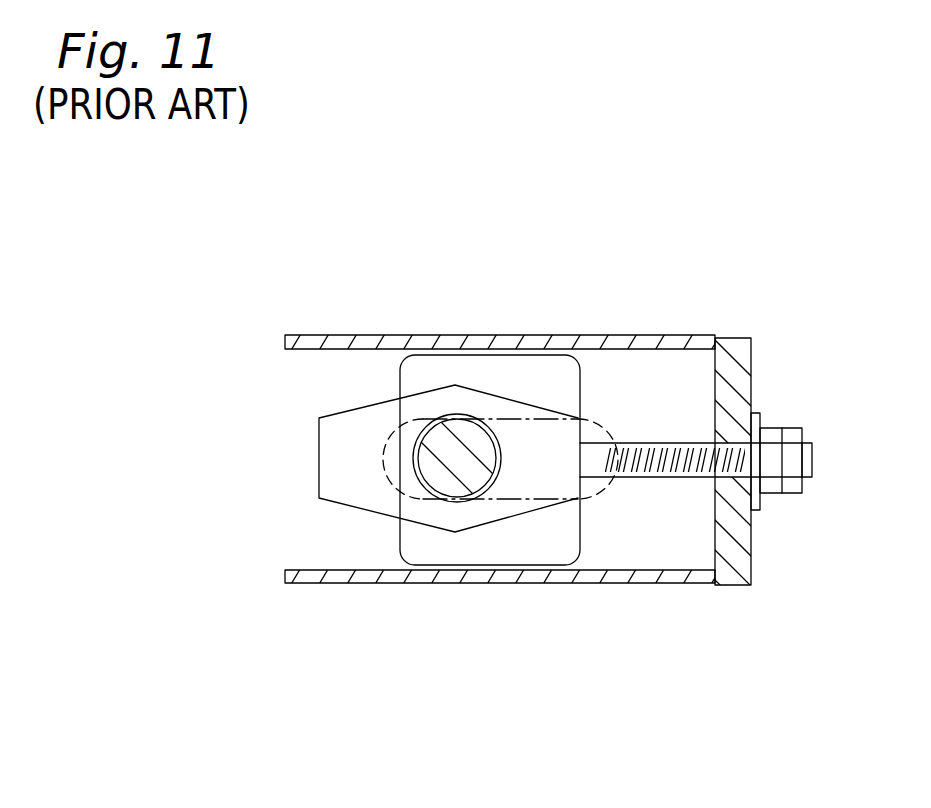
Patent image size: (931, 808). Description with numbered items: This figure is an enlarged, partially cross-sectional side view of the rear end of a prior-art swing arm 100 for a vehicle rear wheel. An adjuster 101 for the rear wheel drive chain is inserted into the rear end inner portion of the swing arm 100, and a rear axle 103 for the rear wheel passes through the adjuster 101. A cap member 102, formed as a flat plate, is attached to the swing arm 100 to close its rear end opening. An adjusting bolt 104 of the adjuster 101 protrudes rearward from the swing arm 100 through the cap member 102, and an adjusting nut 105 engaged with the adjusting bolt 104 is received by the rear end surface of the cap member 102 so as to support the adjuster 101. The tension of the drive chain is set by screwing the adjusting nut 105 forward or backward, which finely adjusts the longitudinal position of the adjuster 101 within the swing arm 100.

The swing arm 100 is at (355, 335).
The adjuster 101 is at (368, 510).
The cap member 102 is at (733, 360).
The rear axle 103 is at (457, 475).
The adjusting bolt 104 is at (657, 478).
The adjusting nut 105 is at (768, 498).